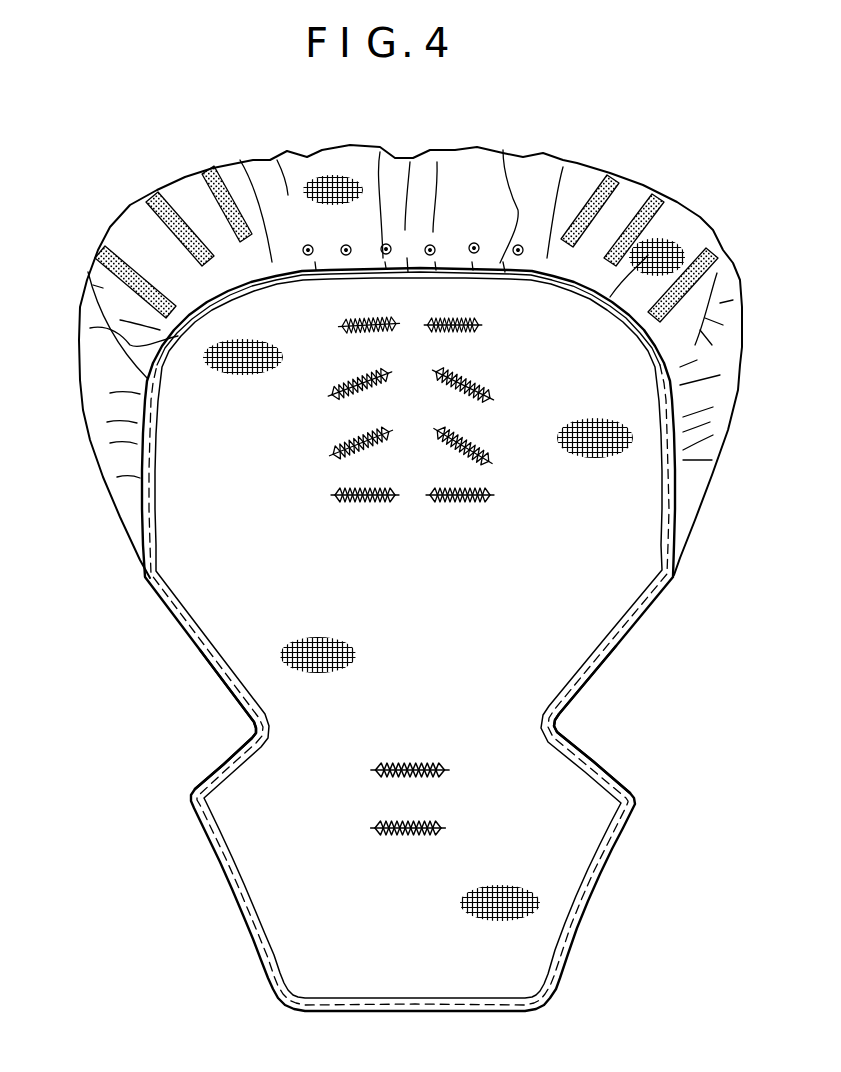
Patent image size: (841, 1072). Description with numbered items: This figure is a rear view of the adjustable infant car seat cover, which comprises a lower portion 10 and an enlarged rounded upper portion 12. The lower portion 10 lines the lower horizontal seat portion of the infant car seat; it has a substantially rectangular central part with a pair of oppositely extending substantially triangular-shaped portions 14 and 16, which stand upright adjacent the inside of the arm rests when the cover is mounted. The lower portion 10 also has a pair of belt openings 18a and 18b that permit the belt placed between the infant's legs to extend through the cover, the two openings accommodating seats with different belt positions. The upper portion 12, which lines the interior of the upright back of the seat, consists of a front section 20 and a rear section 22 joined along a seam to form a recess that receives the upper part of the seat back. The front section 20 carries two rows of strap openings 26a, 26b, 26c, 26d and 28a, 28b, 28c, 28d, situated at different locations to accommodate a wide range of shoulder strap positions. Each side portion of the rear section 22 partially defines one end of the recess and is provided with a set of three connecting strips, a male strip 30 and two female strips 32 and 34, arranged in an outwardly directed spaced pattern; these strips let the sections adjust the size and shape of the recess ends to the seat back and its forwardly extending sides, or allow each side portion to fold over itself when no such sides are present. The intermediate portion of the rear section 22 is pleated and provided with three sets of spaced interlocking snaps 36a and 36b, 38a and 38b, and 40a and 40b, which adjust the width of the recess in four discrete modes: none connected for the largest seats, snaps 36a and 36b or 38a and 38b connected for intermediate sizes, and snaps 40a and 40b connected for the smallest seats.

The lower portion 10 is at (288, 868).
The upper portion 12 is at (207, 589).
The triangular-shaped portion 14 is at (243, 777).
The triangular-shaped portion 16 is at (583, 800).
The belt opening 18a is at (378, 830).
The belt opening 18b is at (375, 770).
The front section 20 is at (586, 615).
The rear section 22 is at (130, 233).
The strap opening 26a is at (492, 493).
The strap opening 26b is at (493, 460).
The strap opening 26c is at (492, 396).
The strap opening 26d is at (480, 322).
The strap opening 28a is at (335, 495).
The strap opening 28b is at (330, 448).
The strap opening 28c is at (330, 386).
The strap opening 28d is at (342, 325).
The male strip 30 is at (100, 250).
The female strip 32 is at (153, 194).
The female strip 34 is at (208, 168).
The snap 36a is at (388, 244).
The snap 36b is at (430, 256).
The snap 38a is at (347, 256).
The snap 38b is at (500, 193).
The snap 40a is at (325, 222).
The snap 40b is at (517, 256).